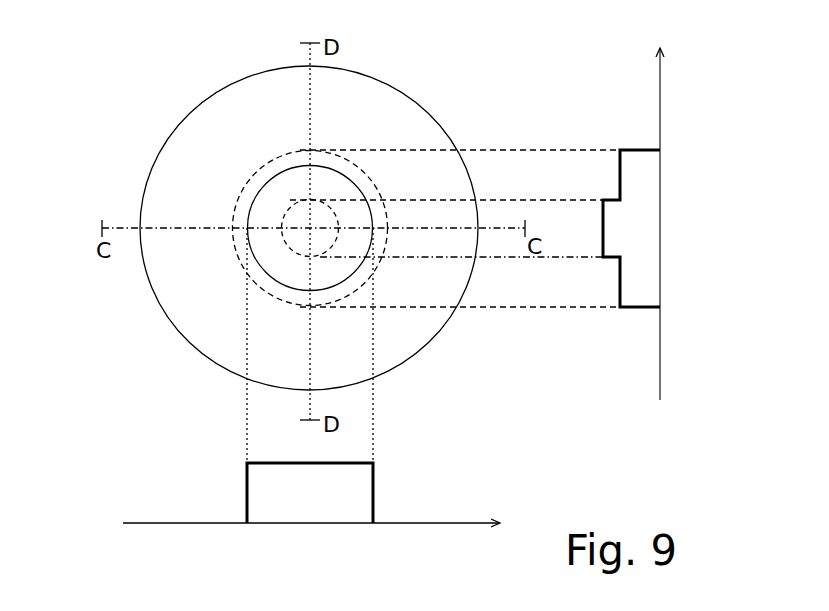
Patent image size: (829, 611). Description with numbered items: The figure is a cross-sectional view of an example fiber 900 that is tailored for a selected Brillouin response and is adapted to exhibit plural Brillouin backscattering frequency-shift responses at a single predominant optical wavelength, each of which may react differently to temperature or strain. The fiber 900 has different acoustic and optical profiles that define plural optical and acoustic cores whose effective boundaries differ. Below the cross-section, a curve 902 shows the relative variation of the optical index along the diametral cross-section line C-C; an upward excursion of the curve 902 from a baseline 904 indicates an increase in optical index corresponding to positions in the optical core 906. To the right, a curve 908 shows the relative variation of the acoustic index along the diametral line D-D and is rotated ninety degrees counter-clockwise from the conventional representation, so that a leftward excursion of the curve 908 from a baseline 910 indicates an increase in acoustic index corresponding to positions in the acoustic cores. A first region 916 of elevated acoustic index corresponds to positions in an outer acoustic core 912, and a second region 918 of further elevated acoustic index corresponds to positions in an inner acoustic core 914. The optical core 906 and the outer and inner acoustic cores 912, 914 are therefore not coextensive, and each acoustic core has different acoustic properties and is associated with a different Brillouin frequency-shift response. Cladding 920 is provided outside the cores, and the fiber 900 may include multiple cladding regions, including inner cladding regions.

The fiber 900 is at (126, 106).
The curve 902 is at (247, 478).
The baseline 904 is at (141, 521).
The optical core 906 is at (297, 180).
The curve 908 is at (633, 312).
The baseline 910 is at (660, 380).
The outer acoustic core 912 is at (265, 169).
The inner acoustic core 914 is at (286, 222).
The first region 916 is at (648, 283).
The second region 918 is at (638, 229).
The cladding 920 is at (166, 293).